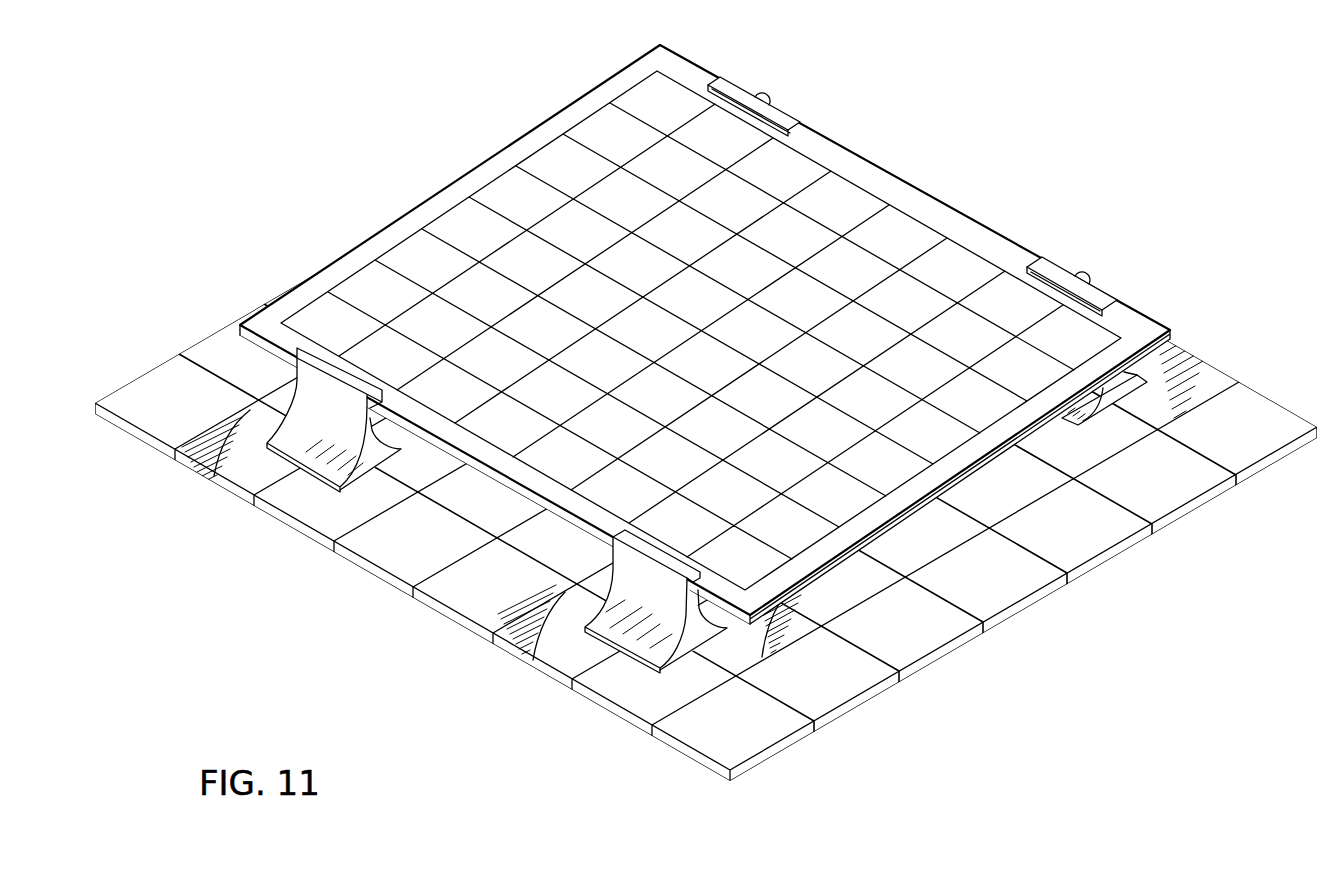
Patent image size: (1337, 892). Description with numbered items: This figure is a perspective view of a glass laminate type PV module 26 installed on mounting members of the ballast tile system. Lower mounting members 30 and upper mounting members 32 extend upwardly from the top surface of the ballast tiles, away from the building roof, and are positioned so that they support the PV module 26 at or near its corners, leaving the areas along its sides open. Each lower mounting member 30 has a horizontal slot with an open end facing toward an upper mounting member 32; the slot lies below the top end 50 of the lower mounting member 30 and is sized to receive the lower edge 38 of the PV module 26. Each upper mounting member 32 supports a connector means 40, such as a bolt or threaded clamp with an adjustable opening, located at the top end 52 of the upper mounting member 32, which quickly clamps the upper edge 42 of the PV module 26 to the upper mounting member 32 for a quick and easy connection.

The PV module 26 is at (848, 200).
The upper edge 42 is at (980, 223).
The connector means 40 is at (1081, 272).
The top end 52 is at (1097, 298).
The top end 50 is at (347, 375).
The lower mounting member 30 is at (640, 607).
The upper mounting member 32 is at (1120, 395).
The lower edge 38 is at (480, 477).